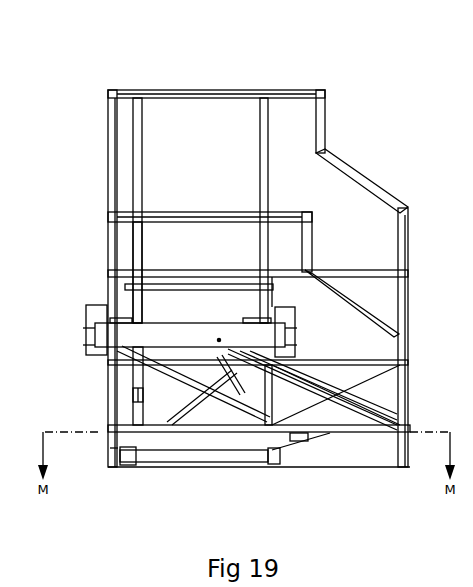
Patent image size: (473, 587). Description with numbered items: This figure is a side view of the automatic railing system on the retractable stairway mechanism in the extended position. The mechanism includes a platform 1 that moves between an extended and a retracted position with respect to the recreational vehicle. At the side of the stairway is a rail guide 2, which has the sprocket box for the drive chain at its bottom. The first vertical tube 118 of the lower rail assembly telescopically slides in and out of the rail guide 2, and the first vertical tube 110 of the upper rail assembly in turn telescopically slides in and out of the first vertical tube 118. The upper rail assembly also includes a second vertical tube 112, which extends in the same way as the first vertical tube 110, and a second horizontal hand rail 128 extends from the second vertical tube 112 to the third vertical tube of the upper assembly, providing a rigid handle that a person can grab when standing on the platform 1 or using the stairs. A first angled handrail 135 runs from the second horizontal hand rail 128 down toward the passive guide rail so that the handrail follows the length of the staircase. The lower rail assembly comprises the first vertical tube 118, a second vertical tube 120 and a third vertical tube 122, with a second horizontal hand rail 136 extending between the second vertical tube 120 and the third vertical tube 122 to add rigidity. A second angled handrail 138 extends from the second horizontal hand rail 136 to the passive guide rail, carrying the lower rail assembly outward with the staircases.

The platform 1 is at (157, 322).
The rail guide 2 is at (217, 341).
The first vertical tube 110 is at (107, 138).
The second vertical tube 112 is at (138, 137).
The first vertical tube 118 is at (107, 237).
The second vertical tube 120 is at (139, 245).
The third vertical tube 122 is at (266, 248).
The second horizontal hand rail 128 is at (233, 88).
The first angled handrail 135 is at (350, 175).
The second horizontal hand rail 136 is at (200, 212).
The second angled handrail 138 is at (372, 309).